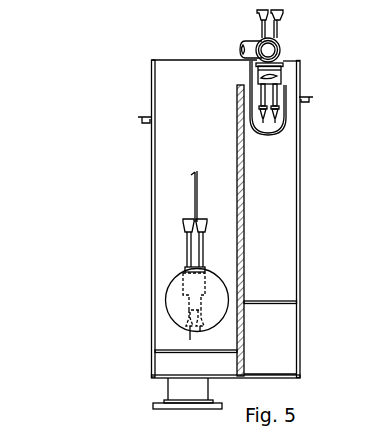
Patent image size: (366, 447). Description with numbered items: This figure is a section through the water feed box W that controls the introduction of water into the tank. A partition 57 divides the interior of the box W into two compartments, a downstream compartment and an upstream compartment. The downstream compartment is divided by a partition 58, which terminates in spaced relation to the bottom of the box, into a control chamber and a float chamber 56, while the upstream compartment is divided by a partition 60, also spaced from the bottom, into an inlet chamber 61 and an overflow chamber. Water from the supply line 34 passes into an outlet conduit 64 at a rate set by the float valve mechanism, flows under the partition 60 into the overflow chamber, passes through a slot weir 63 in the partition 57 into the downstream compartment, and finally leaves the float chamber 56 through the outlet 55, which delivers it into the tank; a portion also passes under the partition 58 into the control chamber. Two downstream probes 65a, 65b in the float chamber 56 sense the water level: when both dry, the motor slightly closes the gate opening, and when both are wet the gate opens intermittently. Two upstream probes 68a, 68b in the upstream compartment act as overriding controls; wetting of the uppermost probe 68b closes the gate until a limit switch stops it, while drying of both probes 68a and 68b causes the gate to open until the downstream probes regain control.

The water feed box W is at (151, 95).
The supply line 34 is at (244, 46).
The outlet conduit 64 is at (284, 73).
The upstream probe 68a is at (258, 119).
The uppermost upstream probe 68b is at (270, 123).
The slot weir 63 is at (238, 120).
The partition 57 is at (244, 220).
The float chamber 56 is at (162, 335).
The downstream probe 65a is at (187, 318).
The downstream probe 65b is at (208, 318).
The partition 58 is at (202, 353).
The partition 60 is at (280, 304).
The inlet chamber 61 is at (270, 364).
The outlet 55 is at (160, 403).